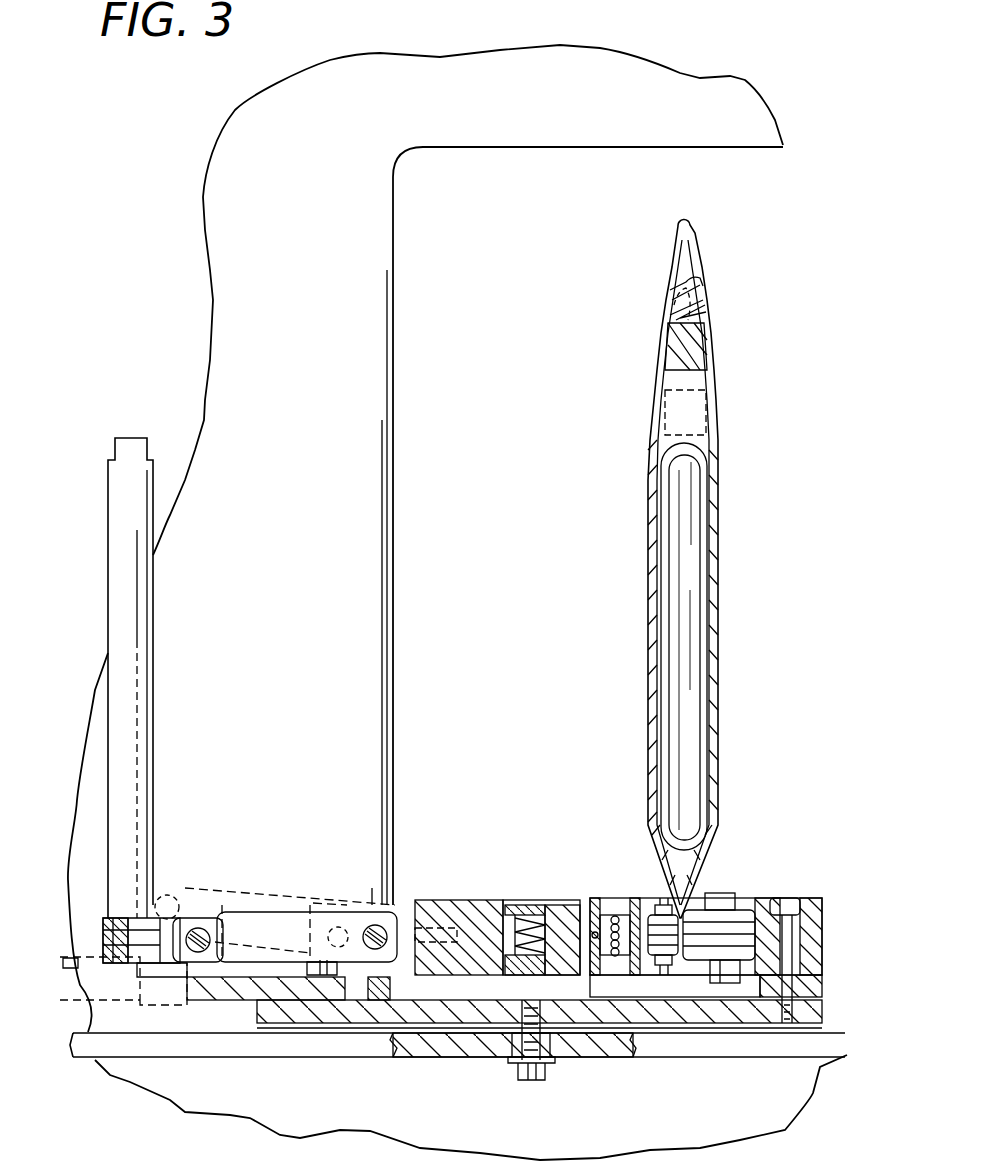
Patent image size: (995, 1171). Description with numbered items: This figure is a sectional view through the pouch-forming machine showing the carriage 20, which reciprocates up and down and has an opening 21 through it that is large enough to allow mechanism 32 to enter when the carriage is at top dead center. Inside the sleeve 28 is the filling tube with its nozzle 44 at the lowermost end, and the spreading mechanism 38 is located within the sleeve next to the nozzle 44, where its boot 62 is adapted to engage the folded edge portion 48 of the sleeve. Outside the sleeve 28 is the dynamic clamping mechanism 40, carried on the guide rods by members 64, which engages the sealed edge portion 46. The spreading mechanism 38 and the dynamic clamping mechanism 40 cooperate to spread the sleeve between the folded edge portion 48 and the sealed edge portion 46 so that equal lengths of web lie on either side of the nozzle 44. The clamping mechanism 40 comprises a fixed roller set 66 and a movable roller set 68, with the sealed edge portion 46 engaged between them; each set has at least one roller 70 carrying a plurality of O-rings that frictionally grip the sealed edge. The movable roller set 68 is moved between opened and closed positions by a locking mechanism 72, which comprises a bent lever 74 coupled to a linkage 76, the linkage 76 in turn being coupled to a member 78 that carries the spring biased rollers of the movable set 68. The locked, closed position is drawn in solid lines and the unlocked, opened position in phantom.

The carriage 20 is at (300, 330).
The opening 21 is at (535, 308).
The sleeve 28 is at (725, 640).
The mechanism 32 is at (513, 608).
The spreading mechanism 38 is at (728, 314).
The dynamic clamping mechanism 40 is at (755, 1040).
The nozzle 44 is at (707, 603).
The sealed edge portion 46 is at (683, 978).
The folded edge portion 48 is at (686, 222).
The boot 62 is at (692, 278).
The members 64 is at (356, 1041).
The fixed roller set 66 is at (747, 902).
The movable roller set 68 is at (656, 920).
The roller 70 is at (715, 925).
The locking mechanism 72 is at (236, 878).
The bent lever 74 is at (147, 753).
The linkage 76 is at (257, 908).
The member 78 is at (462, 900).